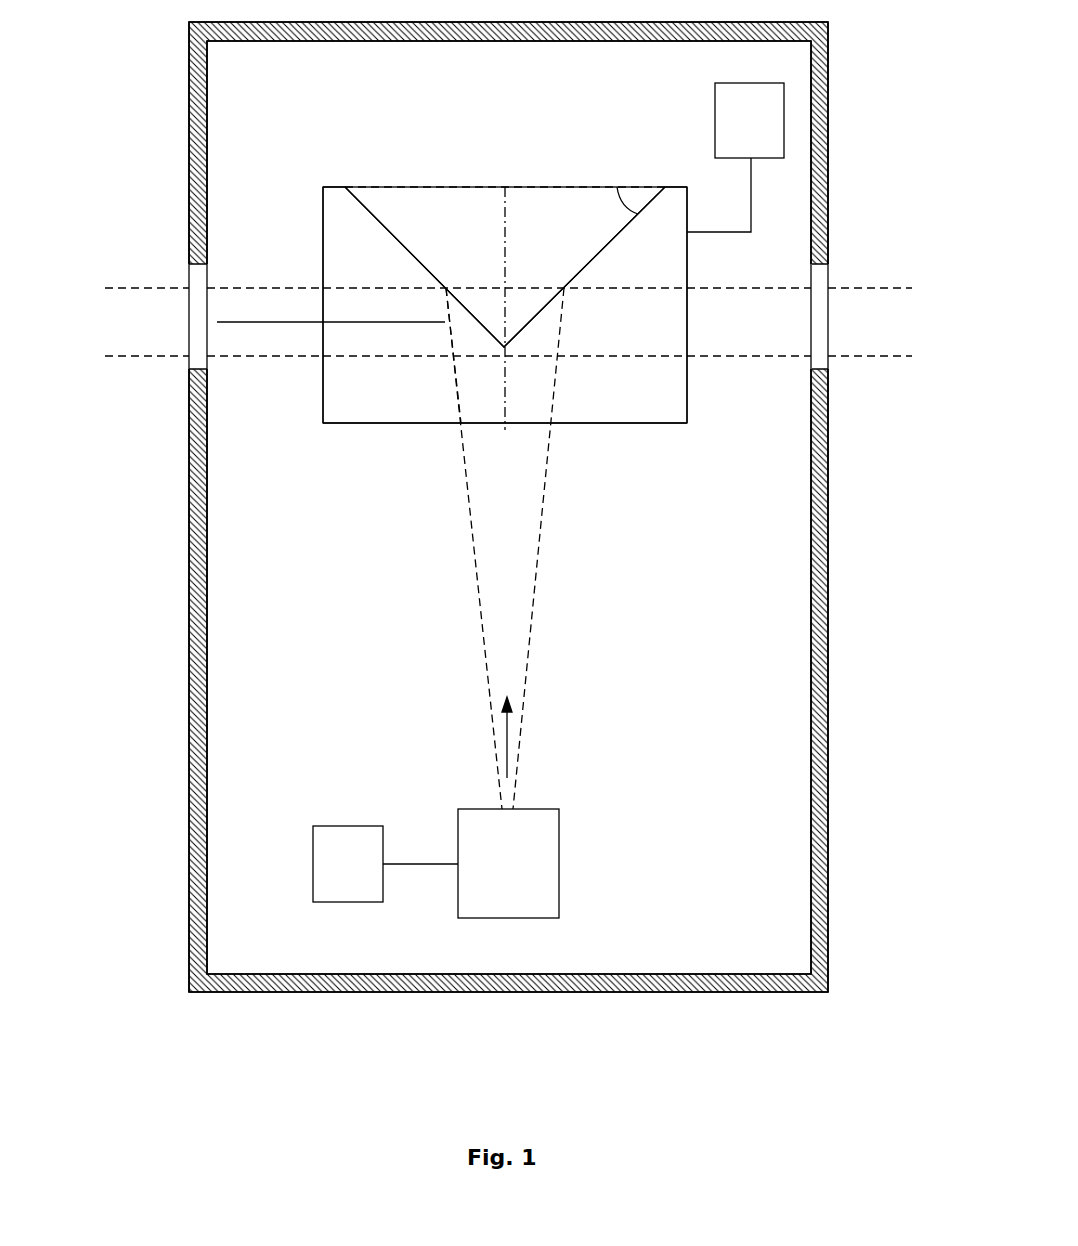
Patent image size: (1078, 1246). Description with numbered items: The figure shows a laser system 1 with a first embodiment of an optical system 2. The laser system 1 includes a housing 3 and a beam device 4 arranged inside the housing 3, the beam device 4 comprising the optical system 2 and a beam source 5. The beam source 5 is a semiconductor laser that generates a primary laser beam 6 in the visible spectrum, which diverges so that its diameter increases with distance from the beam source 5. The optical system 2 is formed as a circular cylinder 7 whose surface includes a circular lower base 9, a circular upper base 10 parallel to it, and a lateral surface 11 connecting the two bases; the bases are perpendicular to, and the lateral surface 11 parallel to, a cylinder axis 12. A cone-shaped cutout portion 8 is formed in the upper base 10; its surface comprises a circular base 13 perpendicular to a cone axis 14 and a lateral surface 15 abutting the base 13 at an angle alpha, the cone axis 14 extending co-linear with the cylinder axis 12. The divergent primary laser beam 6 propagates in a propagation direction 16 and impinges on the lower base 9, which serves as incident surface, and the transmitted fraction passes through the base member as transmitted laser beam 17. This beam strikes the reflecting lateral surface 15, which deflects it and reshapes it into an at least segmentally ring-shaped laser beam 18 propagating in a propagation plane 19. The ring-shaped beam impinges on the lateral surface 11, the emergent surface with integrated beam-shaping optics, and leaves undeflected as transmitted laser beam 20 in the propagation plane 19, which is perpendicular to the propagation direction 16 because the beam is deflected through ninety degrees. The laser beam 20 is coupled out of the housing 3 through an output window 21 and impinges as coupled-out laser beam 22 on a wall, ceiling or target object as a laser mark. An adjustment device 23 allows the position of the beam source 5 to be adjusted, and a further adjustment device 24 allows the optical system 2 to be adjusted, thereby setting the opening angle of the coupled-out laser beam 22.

The laser system 1 is at (494, 507).
The optical system 2 is at (615, 540).
The housing 3 is at (189, 886).
The beam device 4 is at (385, 630).
The beam source 5 is at (508, 863).
The primary laser beam 6 is at (525, 655).
The circular cylinder 7 is at (504, 309).
The cone-shaped cutout portion 8 is at (507, 267).
The lower base 9 is at (424, 428).
The upper base 10 is at (336, 184).
The lateral surface 11 is at (320, 211).
The cylinder axis 12 is at (508, 392).
The circular base 13 is at (491, 184).
The cone axis 14 is at (507, 232).
The lateral surface 15 is at (388, 234).
The propagation direction 16 is at (510, 742).
The transmitted laser beam 17 is at (455, 383).
The ring-shaped laser beam 18 is at (352, 360).
The propagation plane 19 is at (264, 318).
The transmitted laser beam 20 is at (233, 360).
The output window 21 is at (200, 320).
The coupled-out laser beam 22 is at (127, 360).
The adjustment device 23 is at (385, 864).
The further adjustment device 24 is at (735, 157).